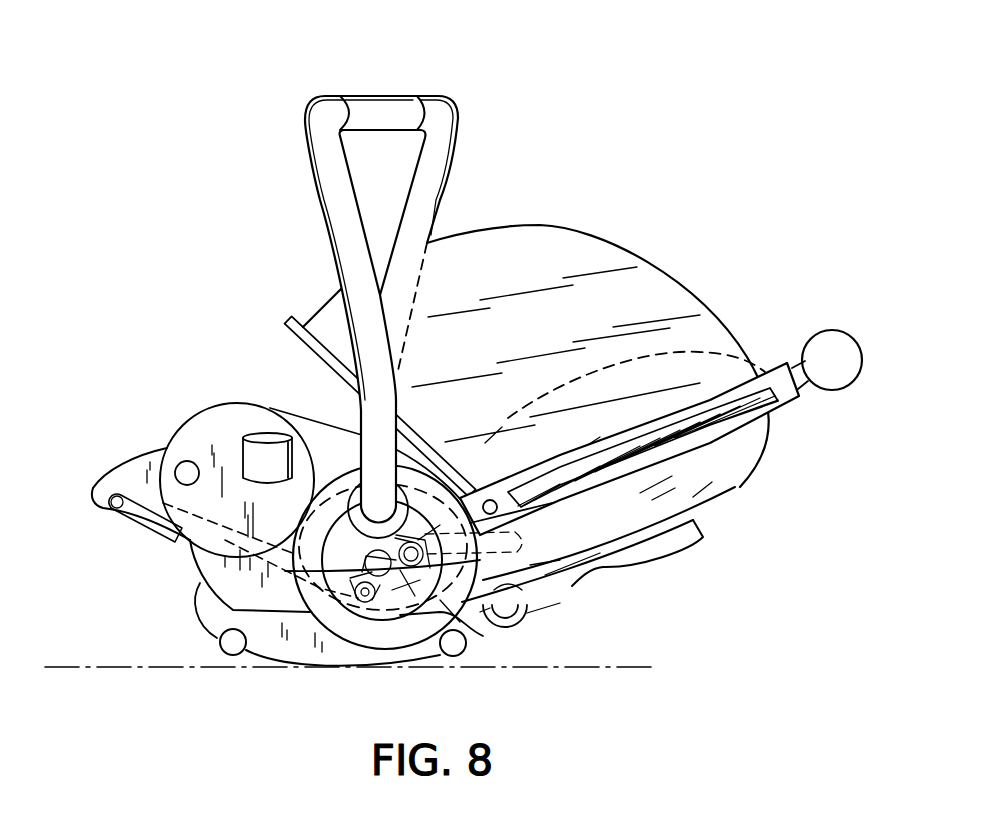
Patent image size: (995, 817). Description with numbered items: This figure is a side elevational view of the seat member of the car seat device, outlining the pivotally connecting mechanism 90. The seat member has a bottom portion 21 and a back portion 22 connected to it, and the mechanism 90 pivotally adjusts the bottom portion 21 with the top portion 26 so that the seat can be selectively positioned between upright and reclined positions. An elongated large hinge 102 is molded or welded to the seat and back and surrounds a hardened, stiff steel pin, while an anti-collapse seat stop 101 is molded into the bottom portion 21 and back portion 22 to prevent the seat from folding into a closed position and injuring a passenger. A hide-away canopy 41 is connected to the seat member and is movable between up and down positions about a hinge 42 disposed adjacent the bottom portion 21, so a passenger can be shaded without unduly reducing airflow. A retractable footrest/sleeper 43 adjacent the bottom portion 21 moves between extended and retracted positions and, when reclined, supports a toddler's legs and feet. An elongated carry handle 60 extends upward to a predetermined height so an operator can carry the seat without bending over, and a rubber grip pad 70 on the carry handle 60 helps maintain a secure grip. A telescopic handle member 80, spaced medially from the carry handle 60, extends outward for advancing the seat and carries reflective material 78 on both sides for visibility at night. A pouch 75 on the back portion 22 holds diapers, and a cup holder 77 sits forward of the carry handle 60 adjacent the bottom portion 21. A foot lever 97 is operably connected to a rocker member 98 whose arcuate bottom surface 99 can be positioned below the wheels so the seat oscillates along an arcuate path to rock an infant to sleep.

The bottom portion 21 is at (203, 573).
The back portion 22 is at (733, 487).
The top portion 26 is at (708, 356).
The hide-away canopy 41 is at (542, 227).
The hinge 42 is at (498, 506).
The retractable footrest/sleeper 43 is at (132, 462).
The carry handle 60 is at (442, 94).
The grip pad 70 is at (372, 94).
The pouch 75 is at (700, 540).
The cup holder 77 is at (262, 448).
The reflective material 78 is at (753, 450).
The telescopic handle member 80 is at (810, 390).
The pivotally connecting mechanism 90 is at (483, 636).
The foot lever 97 is at (527, 614).
The rocker member 98 is at (265, 647).
The arcuate bottom surface 99 is at (313, 667).
The anti-collapse seat stop 101 is at (393, 595).
The elongated large hinge 102 is at (367, 607).